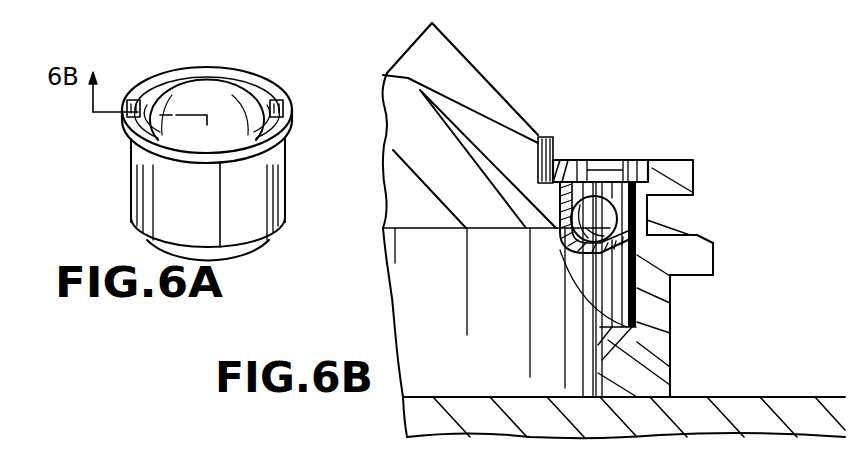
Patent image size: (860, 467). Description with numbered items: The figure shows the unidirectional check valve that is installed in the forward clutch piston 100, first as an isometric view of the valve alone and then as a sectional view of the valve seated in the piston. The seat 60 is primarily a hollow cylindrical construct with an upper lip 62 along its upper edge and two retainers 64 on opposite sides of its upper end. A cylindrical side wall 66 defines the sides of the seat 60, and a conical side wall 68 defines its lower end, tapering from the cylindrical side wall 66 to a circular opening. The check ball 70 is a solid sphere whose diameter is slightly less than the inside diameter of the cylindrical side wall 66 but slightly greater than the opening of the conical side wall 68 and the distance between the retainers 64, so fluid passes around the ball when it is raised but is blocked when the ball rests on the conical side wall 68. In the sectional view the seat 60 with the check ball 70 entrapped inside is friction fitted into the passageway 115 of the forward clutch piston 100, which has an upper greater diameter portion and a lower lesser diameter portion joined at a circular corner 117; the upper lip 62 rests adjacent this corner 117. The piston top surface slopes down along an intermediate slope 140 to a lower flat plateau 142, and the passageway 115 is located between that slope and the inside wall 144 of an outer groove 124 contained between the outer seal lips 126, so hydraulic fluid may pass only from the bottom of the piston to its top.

In FIG. 6A, the seat 60 is at (128, 185).
In FIG. 6B, the seat 60 is at (639, 160).
In FIG. 6A, the upper lip 62 is at (256, 92).
In FIG. 6B, the upper lip 62 is at (623, 160).
In FIG. 6A, the retainers 64 is at (284, 108).
In FIG. 6B, the retainers 64 is at (564, 160).
In FIG. 6A, the cylindrical side wall 66 is at (284, 198).
In FIG. 6A, the conical side wall 68 is at (231, 253).
In FIG. 6A, the check ball 70 is at (237, 98).
In FIG. 6B, the check ball 70 is at (672, 330).
In FIG. 6B, the forward clutch piston 100 is at (461, 328).
In FIG. 6B, the passageway 115 is at (673, 300).
In FIG. 6B, the circular corner 117 is at (550, 138).
In FIG. 6B, the outer groove 124 is at (700, 233).
In FIG. 6B, the outer seal lips 126 is at (694, 172).
In FIG. 6B, the intermediate slope 140 is at (480, 71).
In FIG. 6B, the lower flat plateau 142 is at (676, 160).
In FIG. 6B, the inside wall 144 is at (648, 215).